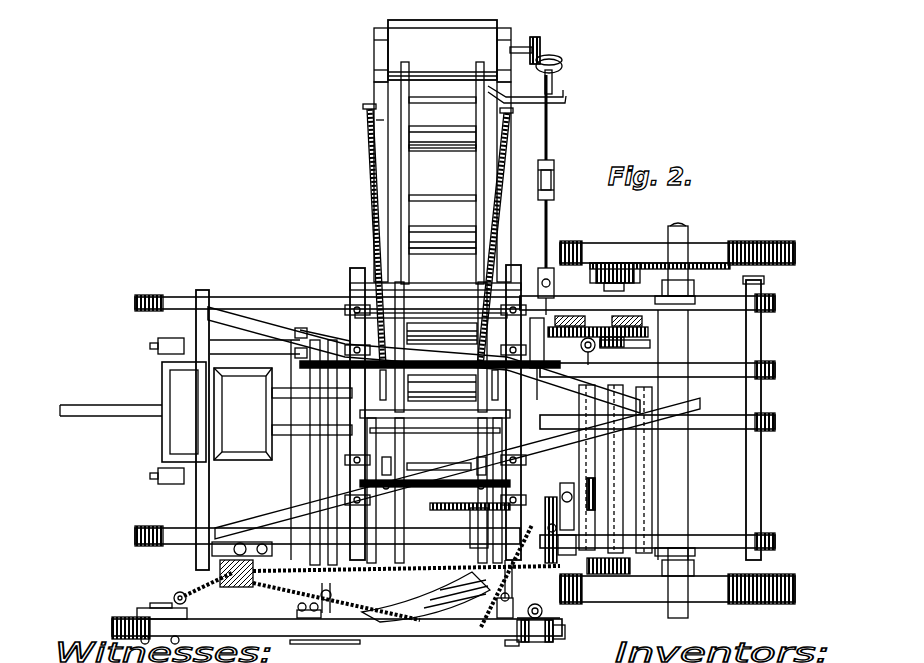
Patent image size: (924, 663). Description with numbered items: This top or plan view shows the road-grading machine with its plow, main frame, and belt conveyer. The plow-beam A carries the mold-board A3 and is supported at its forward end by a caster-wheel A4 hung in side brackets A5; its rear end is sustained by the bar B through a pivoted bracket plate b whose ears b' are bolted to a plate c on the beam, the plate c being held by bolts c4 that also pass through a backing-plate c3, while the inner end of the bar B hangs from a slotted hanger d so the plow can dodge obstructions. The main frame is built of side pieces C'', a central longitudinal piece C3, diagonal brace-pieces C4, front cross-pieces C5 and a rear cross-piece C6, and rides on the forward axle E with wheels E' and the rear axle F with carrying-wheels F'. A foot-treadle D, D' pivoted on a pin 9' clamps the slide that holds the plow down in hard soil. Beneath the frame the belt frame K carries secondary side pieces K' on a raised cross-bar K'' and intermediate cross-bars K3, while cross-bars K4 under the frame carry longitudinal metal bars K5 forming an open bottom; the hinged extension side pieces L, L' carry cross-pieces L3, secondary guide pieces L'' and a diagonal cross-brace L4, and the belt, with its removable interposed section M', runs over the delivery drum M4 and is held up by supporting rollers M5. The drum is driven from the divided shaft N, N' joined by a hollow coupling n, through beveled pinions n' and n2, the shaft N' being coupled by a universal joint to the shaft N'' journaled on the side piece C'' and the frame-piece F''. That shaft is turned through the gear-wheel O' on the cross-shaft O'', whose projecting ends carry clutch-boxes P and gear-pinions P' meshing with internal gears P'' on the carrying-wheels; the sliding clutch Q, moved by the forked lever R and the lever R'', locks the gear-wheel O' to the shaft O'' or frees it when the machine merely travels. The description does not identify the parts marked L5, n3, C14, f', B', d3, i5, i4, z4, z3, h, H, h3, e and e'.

The roller or drum M4 is at (415, 56).
The interposed belt section M' is at (513, 31).
The beveled pinion n2 is at (545, 49).
The beveled pinion n' is at (556, 71).
The link L5 is at (527, 92).
The cross-pieces L3 is at (442, 185).
The secondary side pieces L'' is at (442, 169).
The supporting rollers M5 is at (442, 313).
The side pieces of second extension section L' is at (365, 235).
The side pieces of first extension section L is at (437, 237).
The diagonal cross-brace L4 is at (366, 178).
The driving-shaft section N is at (556, 171).
The hollow coupling n is at (551, 177).
The driving-shaft section N' is at (557, 232).
The clevis n3 is at (554, 290).
The front wheels E' is at (455, 411).
The forward axle E is at (424, 411).
The side pieces C'' is at (538, 405).
The diagonal brace-pieces C4 is at (513, 386).
The inclined bar C14 is at (538, 436).
The front cross-pieces C5 is at (264, 415).
The central longitudinal piece C3 is at (498, 402).
The rear cross-piece C6 is at (761, 418).
The bolts f' is at (310, 345).
The lower brace B' is at (436, 483).
The handle block d3 is at (178, 411).
The hanger d is at (166, 414).
The raised cross-bar K'' is at (431, 321).
The main belt frame K is at (430, 389).
The secondary frame side pieces K' is at (439, 385).
The cross-bars K4 is at (435, 437).
The intermediate cross-bars K3 is at (418, 462).
The longitudinal metal bars K5 is at (446, 474).
The rear carrying-wheels F' is at (677, 286).
The gear-pinion P' is at (647, 419).
The clutch-box P is at (616, 277).
The internal gear P'' is at (691, 419).
The short longitudinal frame-piece F'' is at (677, 592).
The rear axle F is at (697, 435).
The gear-wheel O' is at (598, 324).
The cross-shaft O'' is at (624, 329).
The forked lever R is at (610, 351).
The sliding clutch Q is at (625, 352).
The shaft N'' is at (550, 359).
The foot lever or treadle D is at (644, 470).
The foot-treadle D' is at (601, 469).
The clutch lever R'' is at (603, 494).
The crank block i5 is at (504, 570).
The connecting rod i4 is at (465, 590).
The mold-board A3 is at (426, 597).
The plow-beam A is at (337, 628).
The caster-wheel A4 is at (145, 618).
The side plates or brackets A5 is at (161, 599).
The pulley z4 is at (183, 591).
The pulley z3 is at (265, 598).
The cord h is at (227, 582).
The horizontal bar H is at (196, 556).
The cord h3 is at (406, 593).
The catch e is at (317, 602).
The catch plate e' is at (311, 650).
The hanger plate or bracket b is at (513, 601).
The ears b' is at (518, 585).
The plate c is at (540, 609).
The bar B is at (548, 625).
The bolts c4 is at (535, 643).
The backing-plate c3 is at (523, 649).
The pin or pivot 9' is at (598, 567).